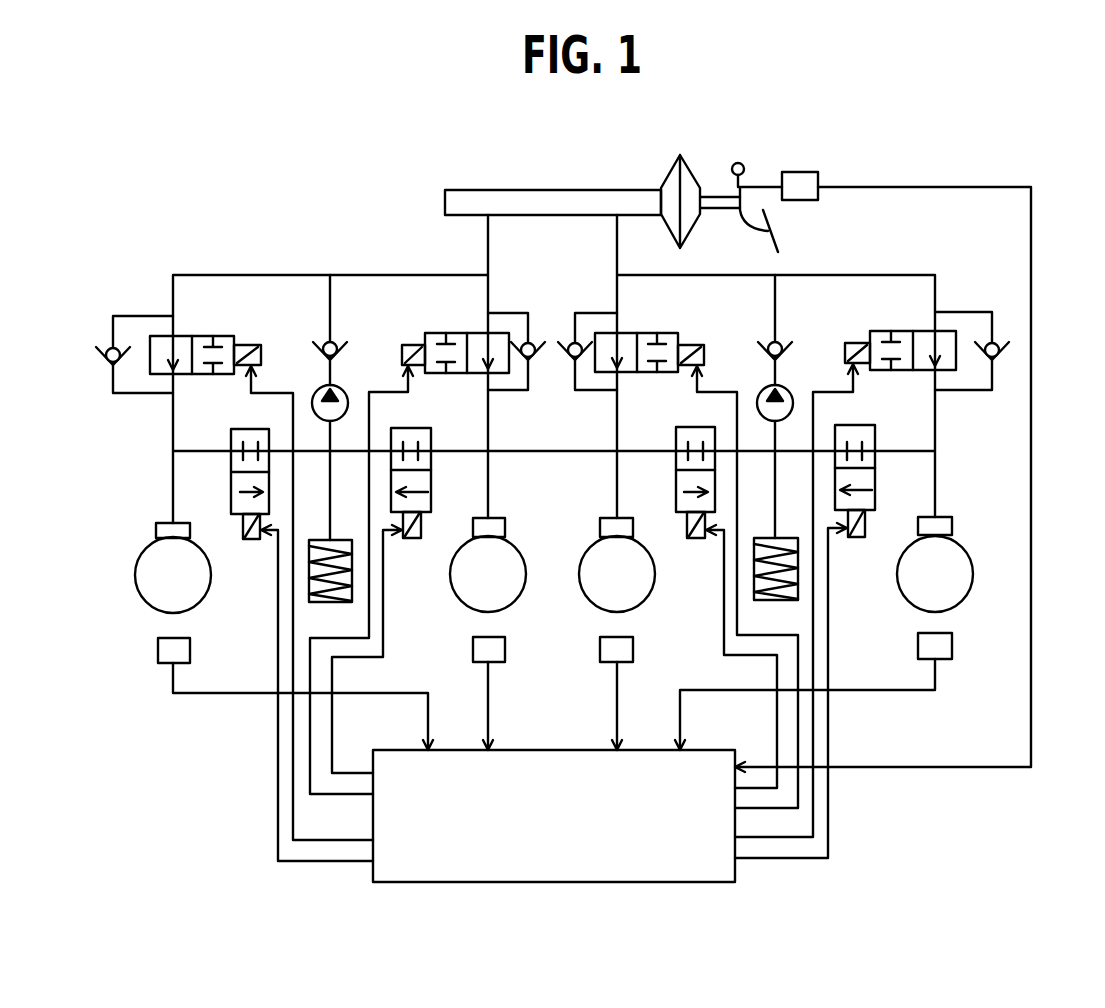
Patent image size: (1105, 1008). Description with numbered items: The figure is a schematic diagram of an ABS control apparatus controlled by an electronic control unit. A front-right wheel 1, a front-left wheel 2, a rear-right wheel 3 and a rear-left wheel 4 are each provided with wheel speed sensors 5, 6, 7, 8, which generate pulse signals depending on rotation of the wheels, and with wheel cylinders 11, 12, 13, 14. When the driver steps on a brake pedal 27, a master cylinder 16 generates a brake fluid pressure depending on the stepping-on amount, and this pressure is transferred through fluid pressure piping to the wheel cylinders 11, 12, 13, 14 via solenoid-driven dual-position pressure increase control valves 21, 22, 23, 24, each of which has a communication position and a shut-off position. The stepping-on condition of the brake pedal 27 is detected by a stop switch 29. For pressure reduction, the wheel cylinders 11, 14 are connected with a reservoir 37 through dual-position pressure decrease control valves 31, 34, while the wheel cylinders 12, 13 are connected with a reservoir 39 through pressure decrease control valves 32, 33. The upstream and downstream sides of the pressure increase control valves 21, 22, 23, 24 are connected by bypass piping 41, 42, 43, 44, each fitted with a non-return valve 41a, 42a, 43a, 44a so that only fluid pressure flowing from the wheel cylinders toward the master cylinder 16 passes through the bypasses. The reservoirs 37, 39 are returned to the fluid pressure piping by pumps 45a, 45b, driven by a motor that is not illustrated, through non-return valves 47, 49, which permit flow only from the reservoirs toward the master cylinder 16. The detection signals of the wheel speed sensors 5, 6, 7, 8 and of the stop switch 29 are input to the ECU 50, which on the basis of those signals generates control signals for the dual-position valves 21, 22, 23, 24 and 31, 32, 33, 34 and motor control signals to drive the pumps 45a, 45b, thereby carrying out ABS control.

The front-right (FR) wheel 1 is at (205, 598).
The front-left (FL) wheel 2 is at (963, 598).
The rear-right (RR) wheel 3 is at (644, 600).
The rear-left (RL) wheel 4 is at (515, 600).
The wheel speed sensor 5 is at (190, 650).
The wheel speed sensor 6 is at (952, 646).
The wheel speed sensor 7 is at (633, 650).
The wheel speed sensor 8 is at (505, 650).
The wheel cylinder 11 is at (182, 522).
The wheel cylinder 12 is at (945, 518).
The wheel cylinder 13 is at (625, 518).
The wheel cylinder 14 is at (497, 518).
The master cylinder 16 is at (587, 192).
The dual-position valve (pressure increase control valve) 21 is at (180, 337).
The dual-position valve (pressure increase control valve) 22 is at (925, 330).
The dual-position valve (pressure increase control valve) 23 is at (650, 332).
The dual-position valve (pressure increase control valve) 24 is at (455, 332).
The brake pedal 27 is at (768, 227).
The stop switch 29 is at (800, 175).
The dual-position valve (pressure decrease control valve) 31 is at (240, 430).
The dual-position valve (pressure decrease control valve) 32 is at (867, 426).
The dual-position valve (pressure decrease control valve) 33 is at (697, 426).
The dual-position valve (pressure decrease control valve) 34 is at (410, 427).
The reservoir 37 is at (320, 540).
The reservoir 39 is at (787, 537).
The bypass piping 41 is at (140, 313).
The non-return valve 41a is at (112, 346).
The bypass piping 42 is at (967, 312).
The non-return valve 42a is at (995, 343).
The bypass piping 43 is at (600, 312).
The non-return valve 43a is at (568, 360).
The bypass piping 44 is at (503, 313).
The non-return valve 44a is at (530, 344).
The pump 45a is at (346, 396).
The pump 45b is at (792, 396).
The non-return valve 47 is at (338, 343).
The non-return valve 49 is at (783, 343).
The ECU 50 is at (713, 749).